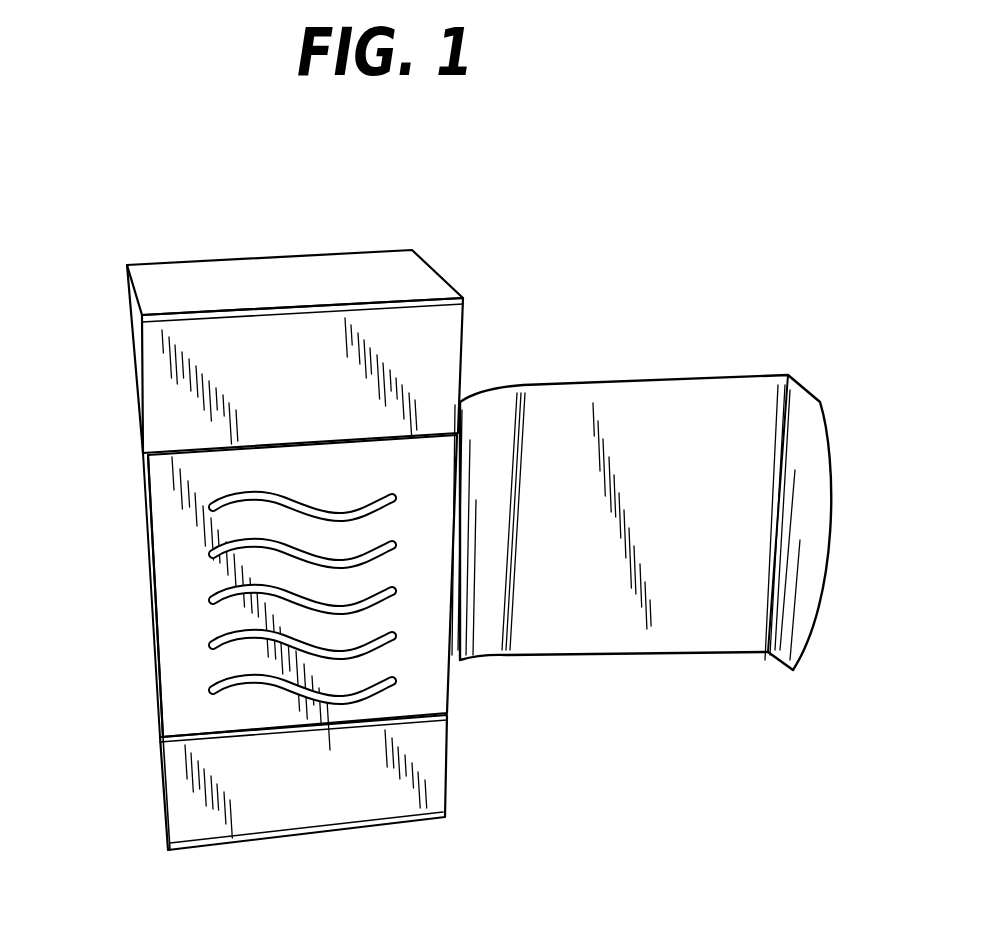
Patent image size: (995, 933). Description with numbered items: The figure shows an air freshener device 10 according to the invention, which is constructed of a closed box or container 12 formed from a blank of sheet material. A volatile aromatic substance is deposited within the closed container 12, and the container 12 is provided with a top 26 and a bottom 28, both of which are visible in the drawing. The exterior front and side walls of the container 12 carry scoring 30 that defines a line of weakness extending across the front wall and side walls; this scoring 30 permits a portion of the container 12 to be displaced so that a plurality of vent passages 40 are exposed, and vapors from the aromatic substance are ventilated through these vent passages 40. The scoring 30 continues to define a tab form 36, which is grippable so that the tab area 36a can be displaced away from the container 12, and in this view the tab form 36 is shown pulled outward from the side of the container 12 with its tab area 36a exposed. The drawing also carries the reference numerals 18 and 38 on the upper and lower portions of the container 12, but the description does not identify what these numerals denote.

The air freshener device 10 is at (205, 242).
The container 12 is at (412, 263).
The cap front wall 18 is at (160, 407).
The top 26 is at (248, 293).
The bottom 28 is at (387, 827).
The scoring 30 is at (162, 455).
The tab form 36 is at (830, 567).
The tab area 36a is at (683, 405).
The front wall 38 is at (178, 673).
The vent passages 40 is at (387, 685).